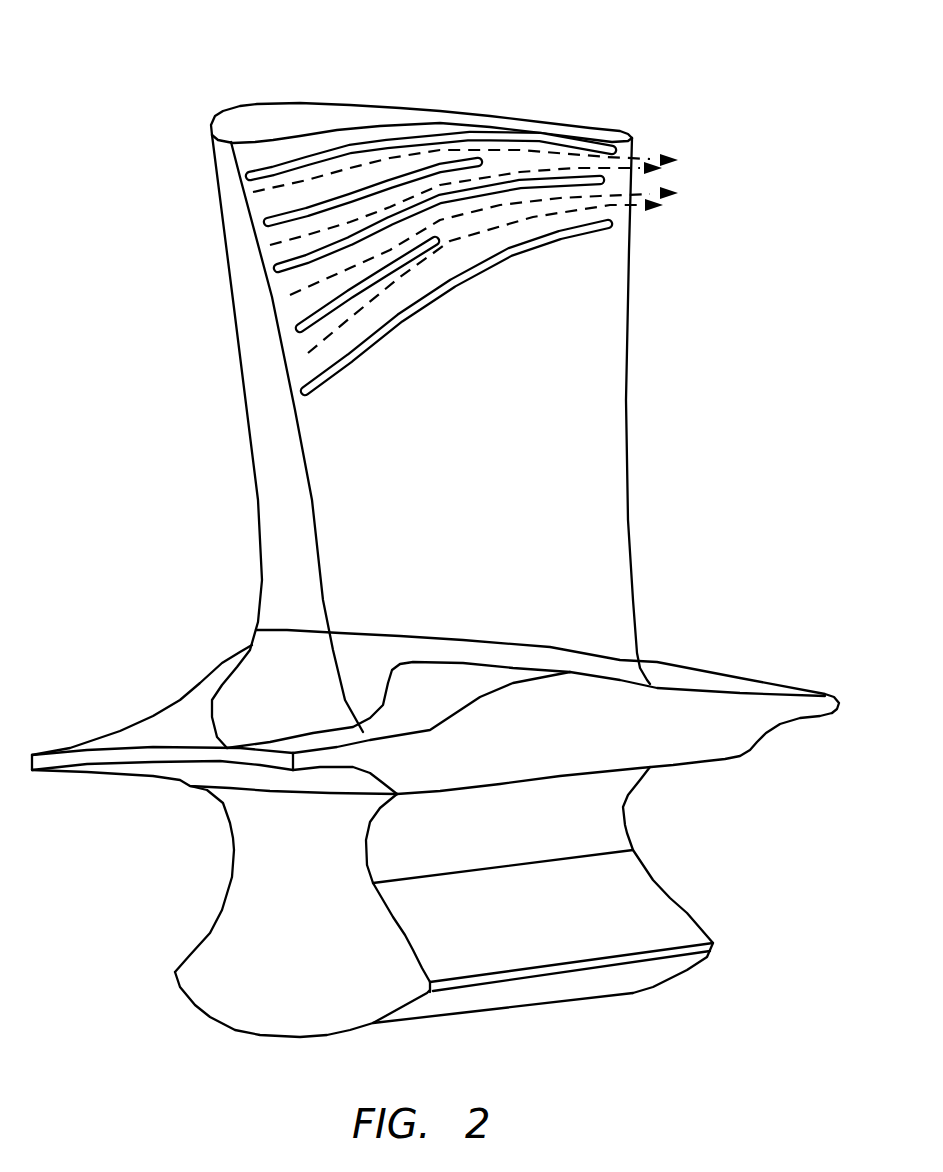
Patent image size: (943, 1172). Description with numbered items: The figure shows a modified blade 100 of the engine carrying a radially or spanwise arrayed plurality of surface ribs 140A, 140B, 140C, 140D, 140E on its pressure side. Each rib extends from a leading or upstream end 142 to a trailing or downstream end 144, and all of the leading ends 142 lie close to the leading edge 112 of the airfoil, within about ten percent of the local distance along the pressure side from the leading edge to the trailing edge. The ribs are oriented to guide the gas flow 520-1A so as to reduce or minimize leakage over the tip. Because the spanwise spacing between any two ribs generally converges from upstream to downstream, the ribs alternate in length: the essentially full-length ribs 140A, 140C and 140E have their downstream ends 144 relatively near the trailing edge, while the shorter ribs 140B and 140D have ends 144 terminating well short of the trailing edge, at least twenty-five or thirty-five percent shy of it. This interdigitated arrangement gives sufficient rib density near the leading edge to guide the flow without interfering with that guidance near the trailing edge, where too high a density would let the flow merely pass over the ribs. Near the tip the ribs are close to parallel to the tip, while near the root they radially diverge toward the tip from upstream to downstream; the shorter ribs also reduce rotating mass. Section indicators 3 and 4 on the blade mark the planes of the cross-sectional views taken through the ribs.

The modified blade 100 is at (76, 58).
The leading edge 112 is at (396, 425).
The surface rib 140A is at (456, 319).
The surface rib 140B is at (287, 291).
The surface rib 140C is at (367, 230).
The surface rib 140D is at (301, 194).
The surface rib 140E is at (360, 156).
The leading end 142 is at (234, 392).
The trailing end 144 is at (661, 245).
The section line 3- 3 is at (420, 276).
The section line 4- 4 is at (575, 168).
The gas flow 520-1A is at (734, 219).